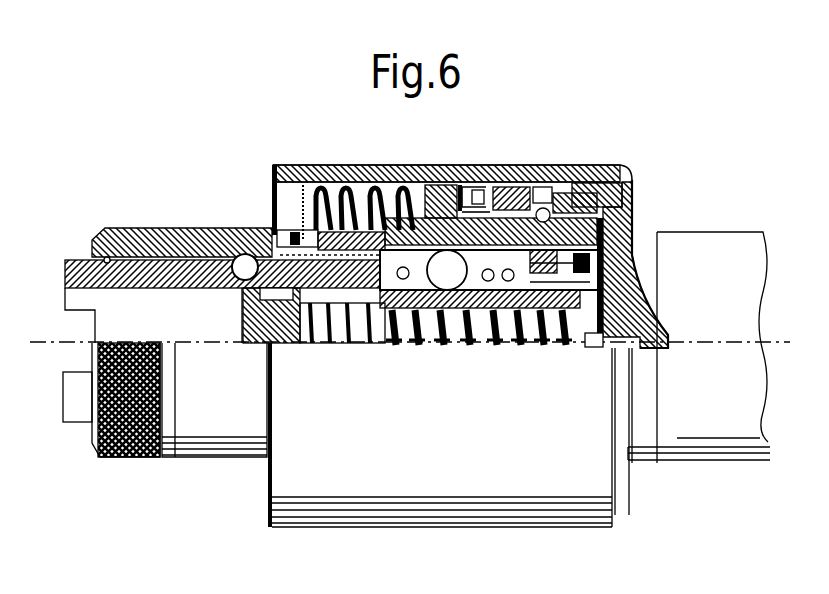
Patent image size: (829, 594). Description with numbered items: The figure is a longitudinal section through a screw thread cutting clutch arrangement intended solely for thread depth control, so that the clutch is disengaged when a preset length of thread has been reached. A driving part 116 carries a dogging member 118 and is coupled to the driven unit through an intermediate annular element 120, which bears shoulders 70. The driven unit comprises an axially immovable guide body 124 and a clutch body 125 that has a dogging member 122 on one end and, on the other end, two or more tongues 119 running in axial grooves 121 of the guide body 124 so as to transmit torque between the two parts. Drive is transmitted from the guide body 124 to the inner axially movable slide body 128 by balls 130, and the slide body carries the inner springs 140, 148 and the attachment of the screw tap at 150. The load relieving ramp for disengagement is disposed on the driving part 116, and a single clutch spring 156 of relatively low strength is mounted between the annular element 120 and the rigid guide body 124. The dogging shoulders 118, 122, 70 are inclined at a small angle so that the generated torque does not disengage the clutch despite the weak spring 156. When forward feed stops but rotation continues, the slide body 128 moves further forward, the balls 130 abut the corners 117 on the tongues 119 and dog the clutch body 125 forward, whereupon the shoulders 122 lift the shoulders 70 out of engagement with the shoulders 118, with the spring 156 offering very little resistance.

The shoulders 70 is at (455, 168).
The driving part 116 is at (633, 198).
The corners 117 is at (395, 345).
The dogging member 118 is at (503, 168).
The tongues 119 is at (318, 166).
The intermediate annular element 120 is at (428, 168).
The axial grooves 121 is at (268, 229).
The dogging member 122 is at (466, 172).
The guide body 124 is at (572, 169).
The clutch body 125 is at (513, 169).
The slide body 128 is at (367, 345).
The balls 130 is at (447, 283).
The inner spring 140 is at (507, 348).
The inner spring 148 is at (557, 348).
The screw tap attachment 150 is at (130, 297).
The clutch spring 156 is at (352, 166).